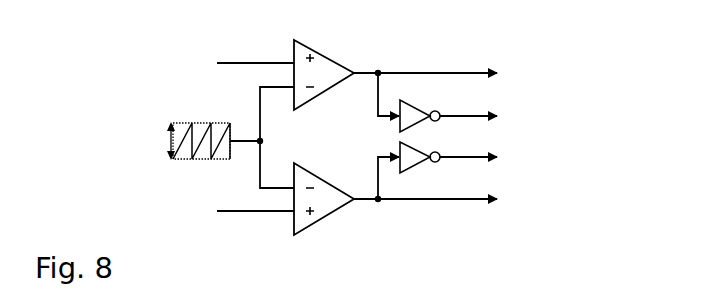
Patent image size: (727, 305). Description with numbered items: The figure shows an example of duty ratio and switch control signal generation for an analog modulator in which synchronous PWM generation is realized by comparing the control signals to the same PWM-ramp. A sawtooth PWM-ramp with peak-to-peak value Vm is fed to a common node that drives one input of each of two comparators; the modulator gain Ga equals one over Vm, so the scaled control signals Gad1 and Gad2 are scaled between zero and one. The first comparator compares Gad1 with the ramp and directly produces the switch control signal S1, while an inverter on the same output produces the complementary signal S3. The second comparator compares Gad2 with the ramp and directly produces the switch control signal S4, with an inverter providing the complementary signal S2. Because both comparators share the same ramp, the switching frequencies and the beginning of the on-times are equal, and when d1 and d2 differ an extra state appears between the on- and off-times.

The switch control signal S1 is at (439, 75).
The switch control signal S2 is at (451, 170).
The switch control signal S3 is at (451, 102).
The switch control signal S4 is at (439, 201).
The peak-to-peak value of the PWM-ramp Vm is at (215, 137).
The scaled control signal Gad1 is at (231, 65).
The scaled control signal Gad2 is at (231, 213).